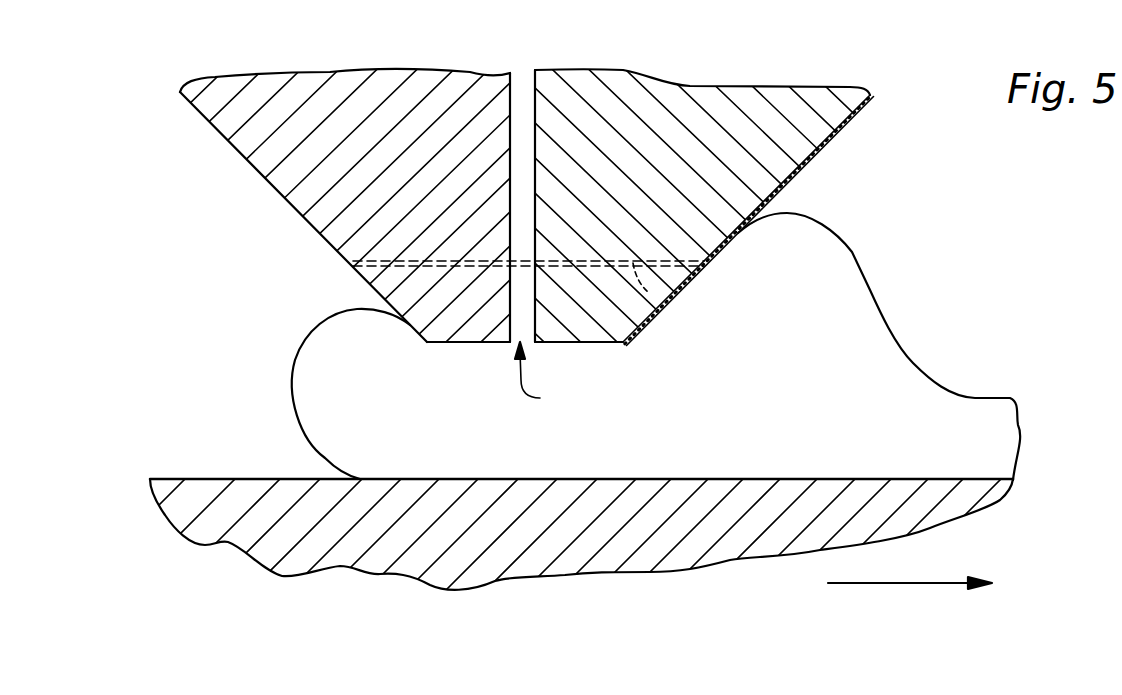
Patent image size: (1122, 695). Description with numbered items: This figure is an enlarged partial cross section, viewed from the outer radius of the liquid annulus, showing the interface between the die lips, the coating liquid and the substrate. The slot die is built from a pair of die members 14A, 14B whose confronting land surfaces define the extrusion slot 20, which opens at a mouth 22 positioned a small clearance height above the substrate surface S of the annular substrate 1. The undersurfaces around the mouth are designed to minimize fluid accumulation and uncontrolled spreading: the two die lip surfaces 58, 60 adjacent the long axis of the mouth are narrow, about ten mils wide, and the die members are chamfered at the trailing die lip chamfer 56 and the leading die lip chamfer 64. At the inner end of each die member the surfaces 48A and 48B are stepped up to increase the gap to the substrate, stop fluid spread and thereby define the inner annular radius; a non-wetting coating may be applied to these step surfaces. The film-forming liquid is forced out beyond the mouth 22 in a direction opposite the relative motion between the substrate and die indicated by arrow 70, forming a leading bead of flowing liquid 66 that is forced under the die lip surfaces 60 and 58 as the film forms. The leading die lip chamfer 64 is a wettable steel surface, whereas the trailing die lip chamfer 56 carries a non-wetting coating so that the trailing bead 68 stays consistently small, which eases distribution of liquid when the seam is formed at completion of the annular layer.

The die member 14B is at (386, 79).
The die member 14A is at (737, 100).
The extrusion slot 20 is at (518, 97).
The mouth 22 is at (542, 378).
The trailing die lip chamfer 56 is at (813, 150).
The die lip surface 58 is at (583, 343).
The die lip surface 60 is at (463, 343).
The leading die lip chamfer 64 is at (328, 242).
The leading bead of flowing liquid 66 is at (292, 361).
The trailing bead 68 is at (850, 246).
The stepped surface 48A is at (648, 292).
The stepped surface 48B is at (407, 267).
The substrate surface S is at (260, 478).
The annular substrate 1 is at (605, 558).
The arrow 70 is at (870, 583).